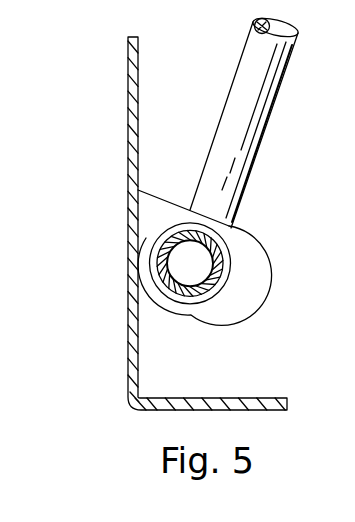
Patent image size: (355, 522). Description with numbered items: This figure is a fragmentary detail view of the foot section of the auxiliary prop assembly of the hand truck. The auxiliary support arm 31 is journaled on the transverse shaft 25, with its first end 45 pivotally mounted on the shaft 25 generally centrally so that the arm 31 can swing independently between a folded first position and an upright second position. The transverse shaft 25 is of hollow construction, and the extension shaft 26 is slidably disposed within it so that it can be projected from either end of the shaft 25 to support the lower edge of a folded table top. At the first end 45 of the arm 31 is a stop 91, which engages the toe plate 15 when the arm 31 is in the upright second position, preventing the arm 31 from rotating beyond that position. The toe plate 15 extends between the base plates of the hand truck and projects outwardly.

The toe plate 15 is at (128, 88).
The stop 91 is at (158, 192).
The transverse shaft 25 is at (234, 289).
The extension shaft 26 is at (188, 284).
The auxiliary support arm 31 is at (286, 83).
The first end 45 is at (236, 207).